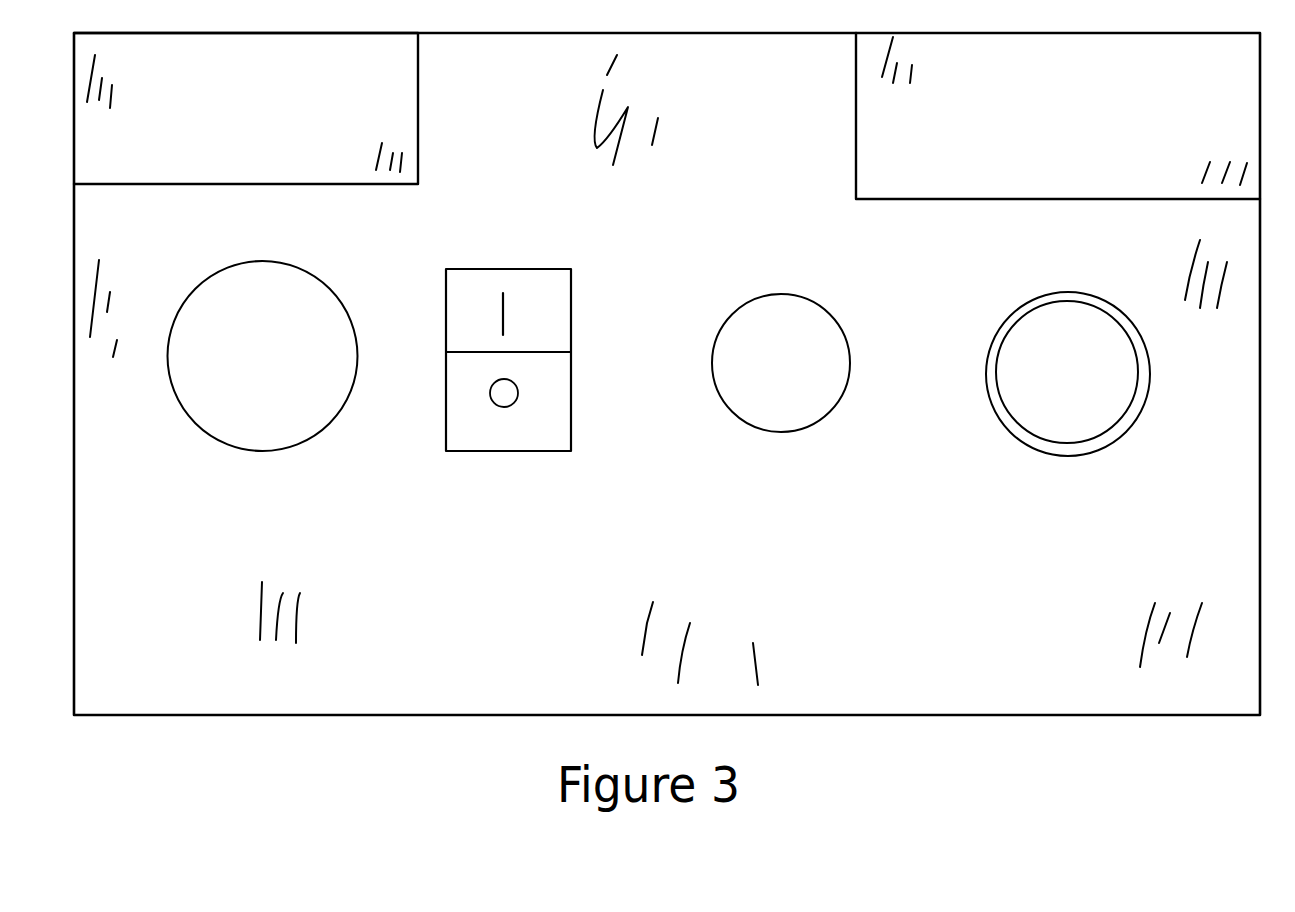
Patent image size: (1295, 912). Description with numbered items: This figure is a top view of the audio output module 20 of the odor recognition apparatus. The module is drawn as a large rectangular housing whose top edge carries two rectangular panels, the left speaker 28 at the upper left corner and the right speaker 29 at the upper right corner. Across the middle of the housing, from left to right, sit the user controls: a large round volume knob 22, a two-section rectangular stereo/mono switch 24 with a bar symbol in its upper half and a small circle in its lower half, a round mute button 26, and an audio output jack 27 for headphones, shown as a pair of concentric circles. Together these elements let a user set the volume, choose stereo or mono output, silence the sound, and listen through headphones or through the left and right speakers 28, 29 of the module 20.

The audio output module 20 is at (257, 717).
The volume knob 22 is at (268, 452).
The stereo/mono switch 24 is at (500, 452).
The mute button 26 is at (785, 433).
The audio output jack 27 is at (1035, 441).
The left speaker 28 is at (418, 150).
The right speaker 29 is at (857, 127).